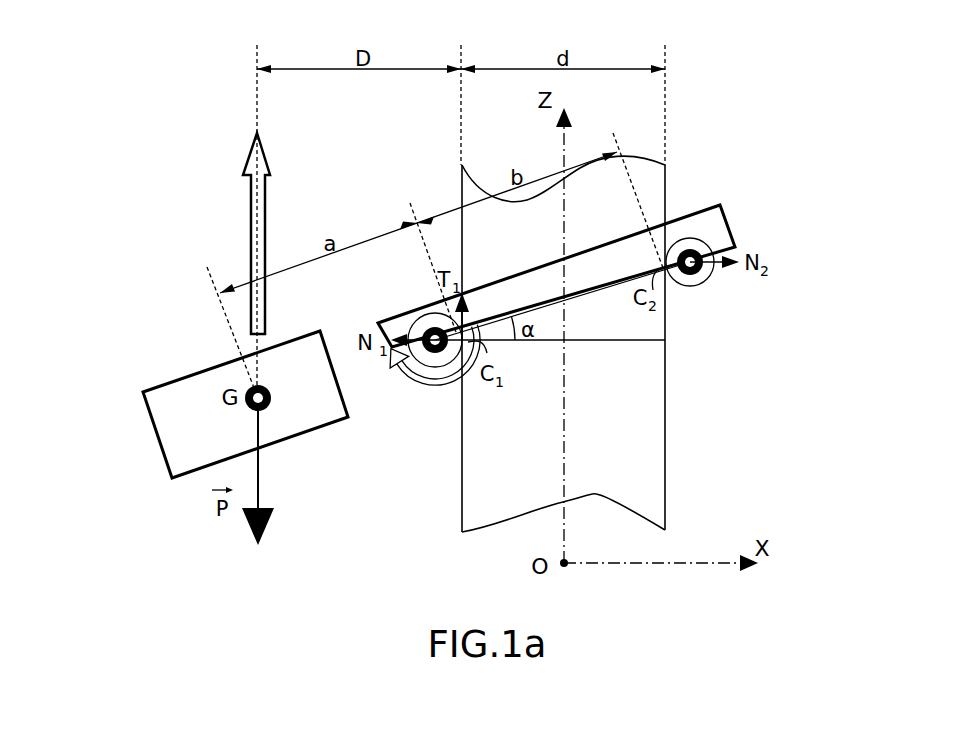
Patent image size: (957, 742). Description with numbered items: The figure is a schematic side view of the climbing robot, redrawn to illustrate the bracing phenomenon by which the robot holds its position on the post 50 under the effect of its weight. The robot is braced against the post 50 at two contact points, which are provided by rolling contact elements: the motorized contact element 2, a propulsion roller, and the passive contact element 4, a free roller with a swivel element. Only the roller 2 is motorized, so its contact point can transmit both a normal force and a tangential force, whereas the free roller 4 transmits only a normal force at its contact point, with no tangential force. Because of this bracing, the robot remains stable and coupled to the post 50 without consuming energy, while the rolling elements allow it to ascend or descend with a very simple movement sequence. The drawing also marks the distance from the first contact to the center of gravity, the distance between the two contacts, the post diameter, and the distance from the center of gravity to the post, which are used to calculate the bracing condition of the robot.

The motorized contact element 2 is at (423, 310).
The passive contact element with swivel element 4 is at (675, 290).
The cylindrical or conical post 50 is at (665, 402).